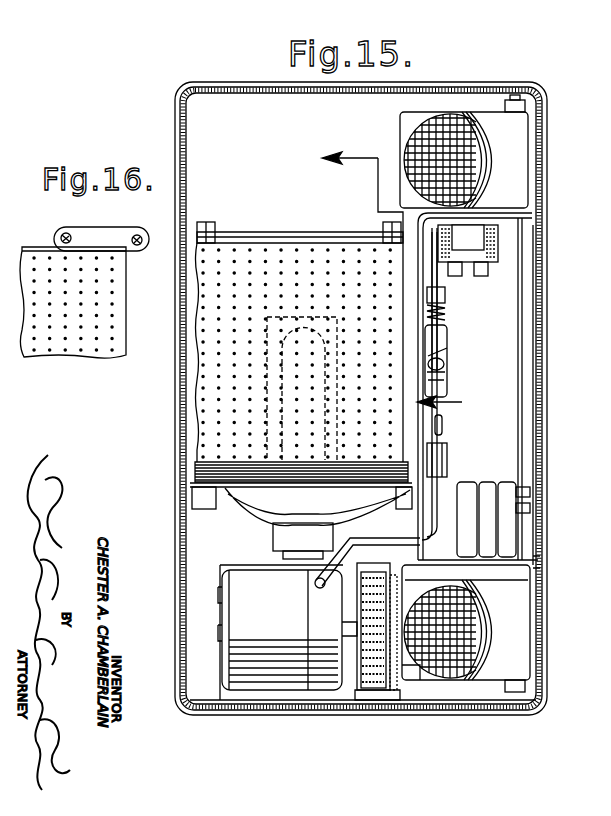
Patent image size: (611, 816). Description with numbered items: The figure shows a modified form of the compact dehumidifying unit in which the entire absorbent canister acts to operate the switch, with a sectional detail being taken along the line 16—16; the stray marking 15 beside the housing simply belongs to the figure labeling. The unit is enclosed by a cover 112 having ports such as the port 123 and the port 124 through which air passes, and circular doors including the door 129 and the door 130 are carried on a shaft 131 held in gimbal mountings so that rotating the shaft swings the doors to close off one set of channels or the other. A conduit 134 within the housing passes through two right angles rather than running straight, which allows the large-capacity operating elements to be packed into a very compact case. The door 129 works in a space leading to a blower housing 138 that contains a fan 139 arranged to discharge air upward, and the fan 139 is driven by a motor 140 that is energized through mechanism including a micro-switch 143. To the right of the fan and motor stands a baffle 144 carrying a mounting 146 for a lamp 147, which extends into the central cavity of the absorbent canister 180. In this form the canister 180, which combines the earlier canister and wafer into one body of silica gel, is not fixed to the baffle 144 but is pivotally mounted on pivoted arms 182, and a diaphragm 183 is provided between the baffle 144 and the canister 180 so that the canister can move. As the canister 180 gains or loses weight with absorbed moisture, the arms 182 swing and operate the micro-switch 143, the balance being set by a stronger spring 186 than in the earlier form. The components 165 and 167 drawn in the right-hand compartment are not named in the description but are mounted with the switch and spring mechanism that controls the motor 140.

In FIG. 15, the cover 112 is at (545, 326).
In FIG. 15, the figure reference 15 is at (604, 367).
In FIG. 15, the section line 16 is at (403, 286).
In FIG. 15, the port 123 is at (443, 590).
In FIG. 15, the port 124 is at (444, 134).
In FIG. 15, the circular door 129 is at (468, 641).
In FIG. 15, the circular door 130 is at (467, 178).
In FIG. 15, the shaft 131 is at (528, 425).
In FIG. 15, the conduit 134 is at (197, 402).
In FIG. 15, the blower housing 138 is at (390, 700).
In FIG. 15, the fan 139 is at (372, 698).
In FIG. 15, the motor 140 is at (292, 623).
In FIG. 15, the micro-switch 143 is at (448, 368).
In FIG. 15, the baffle 144 is at (260, 488).
In FIG. 15, the mounting 146 is at (284, 533).
In FIG. 15, the lamp 147 is at (302, 497).
In FIG. 15, the control unit 165 is at (458, 490).
In FIG. 15, the solenoid 167 is at (470, 276).
In FIG. 15, the canister 180 is at (201, 352).
In FIG. 16, the canister 180 is at (127, 369).
In FIG. 15, the pivoted arms 182 is at (385, 228).
In FIG. 16, the pivoted arms 182 is at (95, 232).
In FIG. 15, the diaphragm 183 is at (195, 471).
In FIG. 15, the spring 186 is at (448, 322).